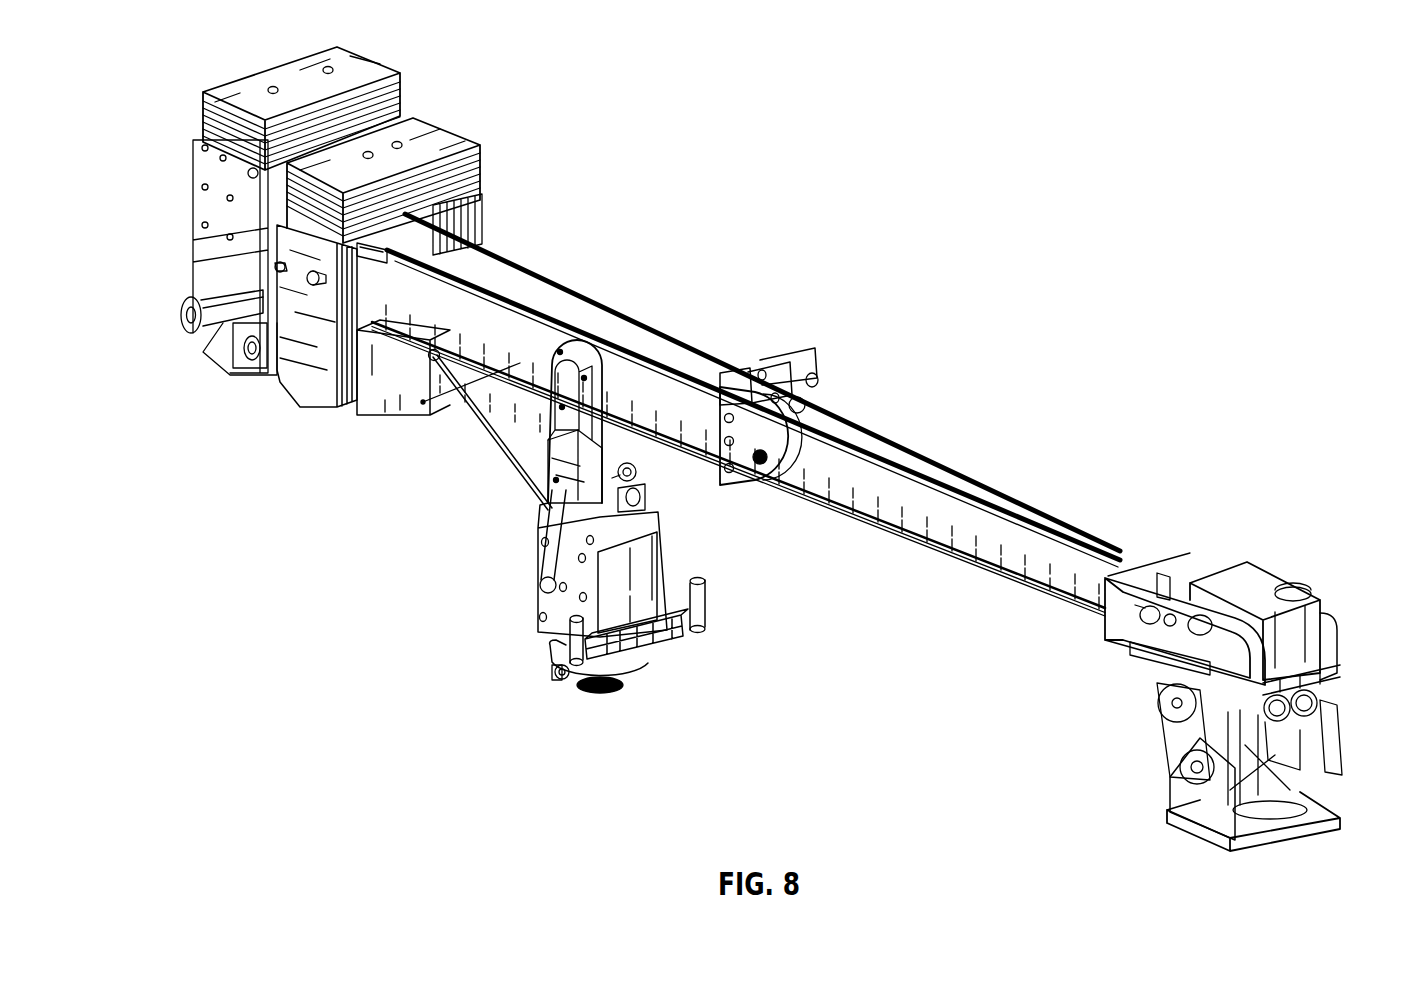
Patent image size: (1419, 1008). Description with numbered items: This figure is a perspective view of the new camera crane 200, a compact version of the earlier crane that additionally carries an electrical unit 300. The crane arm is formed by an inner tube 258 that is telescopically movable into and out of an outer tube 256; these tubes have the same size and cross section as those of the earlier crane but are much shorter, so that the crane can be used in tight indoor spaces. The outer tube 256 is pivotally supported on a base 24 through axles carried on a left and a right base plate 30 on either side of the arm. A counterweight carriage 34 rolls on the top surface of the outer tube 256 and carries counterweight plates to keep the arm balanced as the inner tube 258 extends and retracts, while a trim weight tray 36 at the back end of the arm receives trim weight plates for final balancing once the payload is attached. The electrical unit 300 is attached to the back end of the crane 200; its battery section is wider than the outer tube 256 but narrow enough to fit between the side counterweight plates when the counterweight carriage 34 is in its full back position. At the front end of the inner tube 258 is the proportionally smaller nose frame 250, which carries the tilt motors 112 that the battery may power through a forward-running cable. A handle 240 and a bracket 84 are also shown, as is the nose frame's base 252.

The trim weight tray 36 is at (400, 66).
The counterweight carriage 34 is at (474, 125).
The electrical unit 300 is at (233, 396).
The handle 240 is at (183, 321).
The camera crane 200 is at (604, 288).
The inner tube 258 is at (985, 547).
The outer tube 256 is at (523, 367).
The base 24 is at (690, 567).
The base plate 30 is at (630, 449).
The bracket 84 is at (748, 480).
The nose frame 250 is at (1120, 684).
The tilt motors 112 is at (1318, 705).
The base 252 is at (1167, 815).